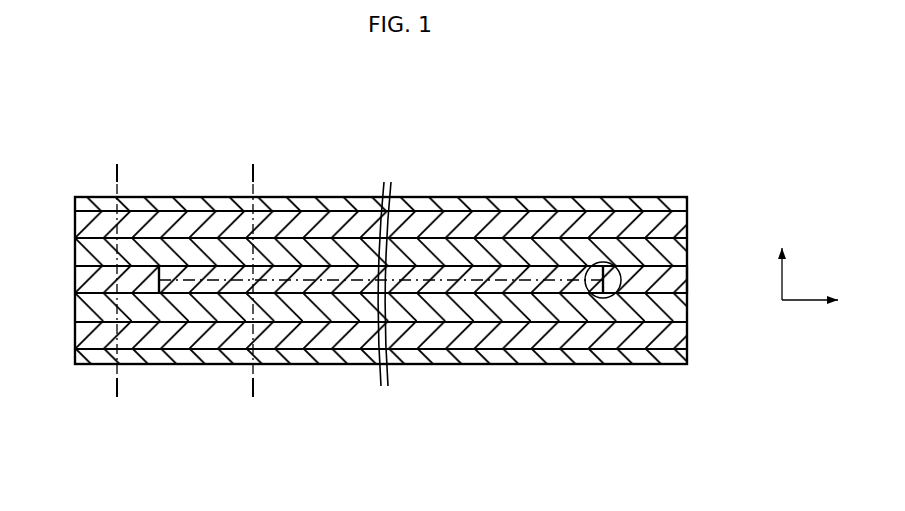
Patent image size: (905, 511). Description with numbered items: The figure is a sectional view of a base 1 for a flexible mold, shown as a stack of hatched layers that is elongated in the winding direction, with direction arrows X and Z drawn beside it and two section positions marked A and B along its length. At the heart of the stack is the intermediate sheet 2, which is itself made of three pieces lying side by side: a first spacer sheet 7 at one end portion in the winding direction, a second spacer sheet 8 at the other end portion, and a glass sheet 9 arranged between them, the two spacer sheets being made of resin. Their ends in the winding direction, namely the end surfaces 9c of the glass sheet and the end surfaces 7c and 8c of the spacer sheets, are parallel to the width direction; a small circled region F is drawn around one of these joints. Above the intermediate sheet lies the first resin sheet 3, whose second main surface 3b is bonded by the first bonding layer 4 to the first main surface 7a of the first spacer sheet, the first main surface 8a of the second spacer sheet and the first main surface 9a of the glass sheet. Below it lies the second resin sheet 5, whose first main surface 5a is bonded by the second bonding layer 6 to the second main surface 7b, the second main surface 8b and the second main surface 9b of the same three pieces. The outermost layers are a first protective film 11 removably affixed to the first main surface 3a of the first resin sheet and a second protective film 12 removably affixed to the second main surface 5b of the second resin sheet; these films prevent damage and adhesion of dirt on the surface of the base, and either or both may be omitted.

The base 1 is at (366, 160).
The intermediate sheet 2 is at (216, 260).
The first resin sheet 3 is at (381, 195).
The first main surface of the first resin sheet 3a is at (450, 208).
The second main surface of the first resin sheet 3b is at (436, 240).
The first bonding layer 4 is at (558, 254).
The second resin sheet 5 is at (381, 374).
The first main surface of the second resin sheet 5a is at (448, 318).
The second main surface of the second resin sheet 5b is at (420, 362).
The second bonding layer 6 is at (540, 307).
The first spacer sheet 7 is at (655, 281).
The first main surface of the first spacer sheet 7a is at (668, 262).
The second main surface of the first spacer sheet 7b is at (648, 296).
The end surface of the first spacer sheet 7c is at (688, 278).
The second spacer sheet 8 is at (116, 281).
The first main surface of the second spacer sheet 8a is at (104, 258).
The second main surface of the second spacer sheet 8b is at (98, 295).
The end surface of the second spacer sheet 8c is at (161, 280).
The glass sheet 9 is at (386, 281).
The first main surface of the glass sheet 9a is at (330, 267).
The second main surface of the glass sheet 9b is at (322, 296).
The end surfaces of the glass sheet 9c is at (160, 279).
The first protective film 11 is at (532, 205).
The second protective film 12 is at (507, 357).
The enlarged region F is at (614, 297).
The section line A- A is at (256, 173).
The section line B- B is at (120, 173).
The X direction X is at (820, 300).
The Z direction Z is at (782, 259).